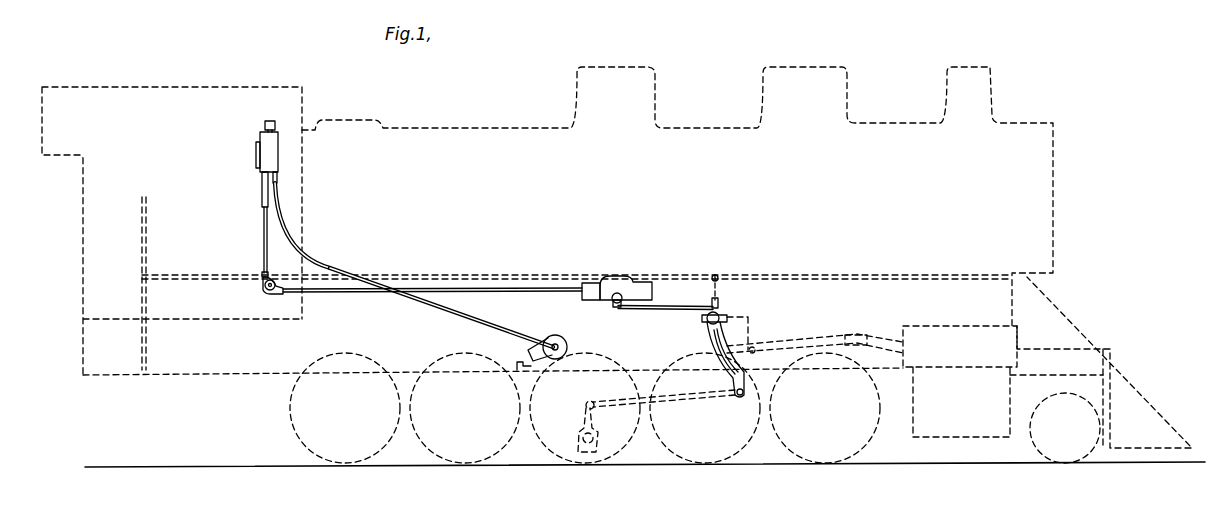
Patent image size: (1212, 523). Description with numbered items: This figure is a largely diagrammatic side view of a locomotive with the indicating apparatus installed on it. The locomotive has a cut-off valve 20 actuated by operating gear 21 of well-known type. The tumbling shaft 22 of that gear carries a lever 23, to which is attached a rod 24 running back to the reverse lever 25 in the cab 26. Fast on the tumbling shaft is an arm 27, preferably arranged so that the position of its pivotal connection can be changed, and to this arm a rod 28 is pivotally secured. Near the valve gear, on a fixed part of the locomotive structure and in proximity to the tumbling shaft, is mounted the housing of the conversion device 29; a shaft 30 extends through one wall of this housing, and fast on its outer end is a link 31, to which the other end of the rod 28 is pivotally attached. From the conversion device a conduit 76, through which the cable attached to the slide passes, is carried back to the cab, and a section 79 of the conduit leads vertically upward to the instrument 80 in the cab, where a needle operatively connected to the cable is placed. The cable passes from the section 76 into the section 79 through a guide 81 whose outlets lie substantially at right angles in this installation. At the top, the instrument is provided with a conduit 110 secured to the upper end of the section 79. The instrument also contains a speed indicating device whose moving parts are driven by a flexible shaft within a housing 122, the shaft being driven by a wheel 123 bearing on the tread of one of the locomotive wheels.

The cut-off valve 20 is at (938, 322).
The operating gear 21 is at (726, 326).
The tumbling shaft 22 is at (720, 318).
The lever 23 is at (720, 300).
The rod 24 is at (207, 280).
The reverse lever 25 is at (146, 256).
The cab 26 is at (187, 115).
The arm 27 is at (718, 310).
The rod 28 is at (667, 305).
The conversion device 29 is at (638, 285).
The shaft 30 is at (617, 293).
The link 31 is at (614, 308).
The conduit 76 is at (467, 289).
The conduit section 79 is at (267, 243).
The instrument 80 is at (272, 157).
The guide 81 is at (268, 293).
The conduit 110 is at (263, 188).
The housing 122 is at (348, 275).
The wheel 123 is at (555, 337).